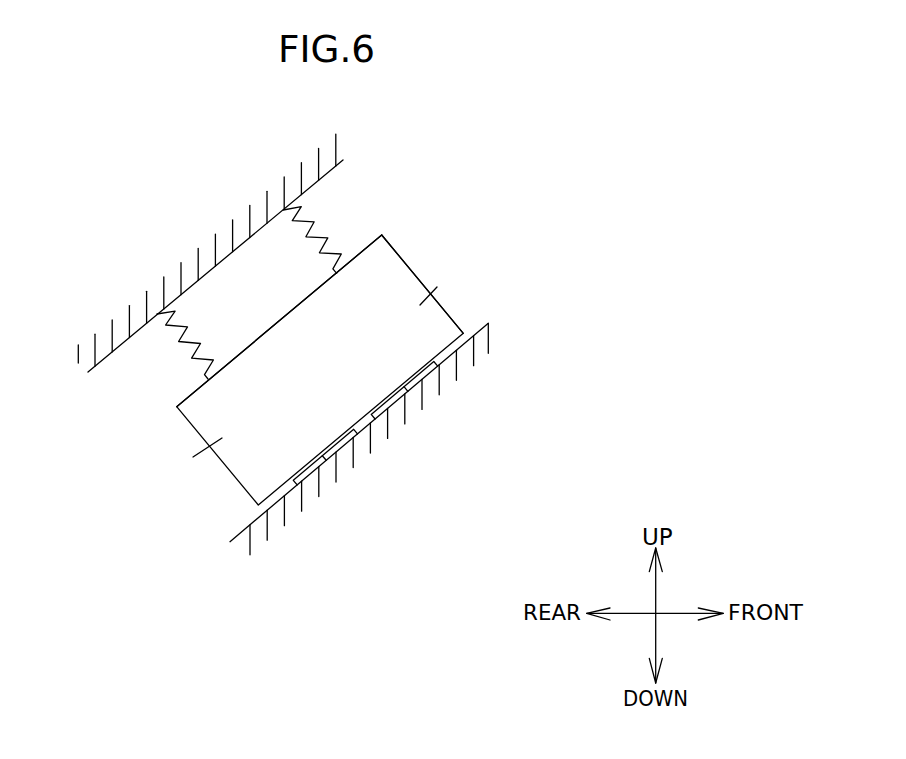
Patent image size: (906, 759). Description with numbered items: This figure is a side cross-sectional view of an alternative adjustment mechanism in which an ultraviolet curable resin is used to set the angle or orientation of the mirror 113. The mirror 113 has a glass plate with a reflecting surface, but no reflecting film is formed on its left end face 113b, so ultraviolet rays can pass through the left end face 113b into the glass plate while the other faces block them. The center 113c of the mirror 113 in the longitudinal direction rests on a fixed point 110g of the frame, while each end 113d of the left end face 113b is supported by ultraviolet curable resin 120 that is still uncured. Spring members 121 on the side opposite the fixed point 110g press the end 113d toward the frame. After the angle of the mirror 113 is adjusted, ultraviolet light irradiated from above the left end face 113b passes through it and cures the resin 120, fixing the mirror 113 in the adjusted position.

The mirror 113 is at (398, 217).
The left end face 113b is at (402, 257).
The center 113c is at (297, 355).
The end 113d is at (437, 287).
The ultraviolet curable resin 120 is at (320, 470).
The spring members 121 is at (317, 235).
The fixed point 110g is at (360, 427).